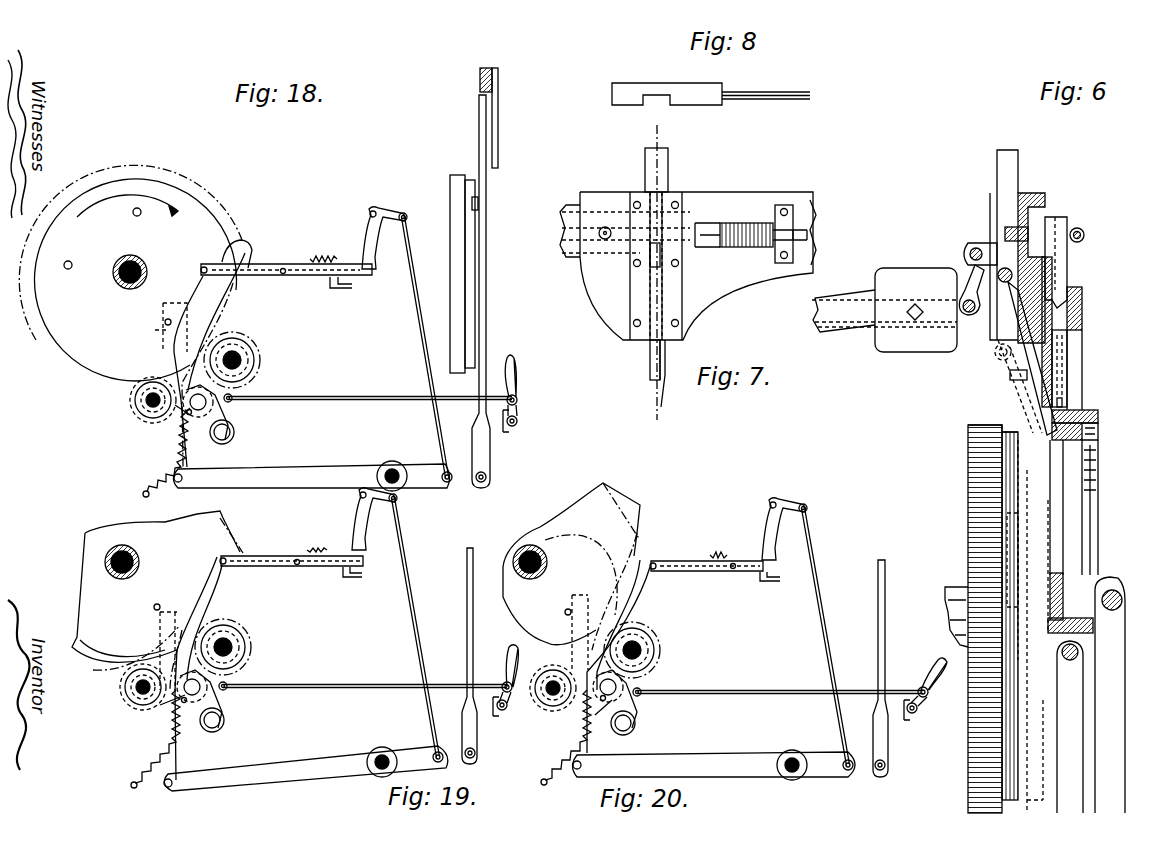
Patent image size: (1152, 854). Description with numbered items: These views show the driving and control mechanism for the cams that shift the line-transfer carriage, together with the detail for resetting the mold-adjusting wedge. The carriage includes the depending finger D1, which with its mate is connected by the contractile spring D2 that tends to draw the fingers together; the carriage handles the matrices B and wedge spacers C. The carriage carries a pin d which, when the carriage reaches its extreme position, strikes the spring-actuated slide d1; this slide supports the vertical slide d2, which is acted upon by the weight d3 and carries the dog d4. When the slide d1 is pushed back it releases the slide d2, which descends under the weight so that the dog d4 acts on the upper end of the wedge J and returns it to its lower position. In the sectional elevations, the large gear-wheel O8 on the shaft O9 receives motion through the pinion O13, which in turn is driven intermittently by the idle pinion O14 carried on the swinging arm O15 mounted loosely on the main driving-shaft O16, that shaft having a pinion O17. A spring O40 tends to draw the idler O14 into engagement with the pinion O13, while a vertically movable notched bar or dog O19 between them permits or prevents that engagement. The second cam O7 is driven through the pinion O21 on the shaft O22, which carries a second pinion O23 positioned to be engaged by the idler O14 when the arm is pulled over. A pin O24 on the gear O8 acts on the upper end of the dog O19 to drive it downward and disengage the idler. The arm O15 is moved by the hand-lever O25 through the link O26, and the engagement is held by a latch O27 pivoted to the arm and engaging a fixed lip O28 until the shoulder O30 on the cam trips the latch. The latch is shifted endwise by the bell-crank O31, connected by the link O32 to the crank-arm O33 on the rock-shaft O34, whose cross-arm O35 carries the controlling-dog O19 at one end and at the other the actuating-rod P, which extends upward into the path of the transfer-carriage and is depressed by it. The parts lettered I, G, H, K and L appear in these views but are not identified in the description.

In FIG. 18, the second cam O7 is at (171, 236).
In FIG. 19, the second cam O7 is at (156, 590).
In FIG. 20, the second cam O7 is at (571, 564).
In FIG. 18, the large gear-wheel O8 is at (178, 180).
In FIG. 19, the large gear-wheel O8 is at (226, 516).
In FIG. 20, the large gear-wheel O8 is at (615, 486).
In FIG. 18, the shaft O9 is at (130, 258).
In FIG. 19, the shaft O9 is at (108, 556).
In FIG. 20, the shaft O9 is at (528, 545).
In FIG. 18, the pinion O13 is at (139, 400).
In FIG. 19, the pinion O13 is at (125, 698).
In FIG. 20, the pinion O13 is at (552, 712).
In FIG. 18, the idle pinion O14 is at (178, 410).
In FIG. 19, the idle pinion O14 is at (160, 708).
In FIG. 20, the idle pinion O14 is at (630, 690).
In FIG. 18, the swinging arm O15 is at (183, 352).
In FIG. 19, the swinging arm O15 is at (205, 612).
In FIG. 20, the swinging arm O15 is at (640, 622).
In FIG. 18, the main driving-shaft O16 is at (232, 440).
In FIG. 19, the main driving-shaft O16 is at (224, 724).
In FIG. 20, the main driving-shaft O16 is at (636, 722).
In FIG. 18, the pinion O17 is at (216, 448).
In FIG. 19, the pinion O17 is at (206, 735).
In FIG. 20, the pinion O17 is at (630, 737).
In FIG. 18, the bar or dog O19 is at (170, 490).
In FIG. 19, the bar or dog O19 is at (160, 630).
In FIG. 20, the bar or dog O19 is at (582, 594).
In FIG. 18, the pinion O21 is at (238, 342).
In FIG. 19, the pinion O21 is at (232, 636).
In FIG. 20, the pinion O21 is at (650, 645).
In FIG. 18, the shaft O22 is at (238, 358).
In FIG. 19, the shaft O22 is at (232, 647).
In FIG. 20, the shaft O22 is at (641, 651).
In FIG. 18, the second pinion O23 is at (262, 363).
In FIG. 19, the second pinion O23 is at (252, 652).
In FIG. 20, the second pinion O23 is at (660, 654).
In FIG. 19, the pin O24 is at (156, 598).
In FIG. 18, the hand-lever O25 is at (518, 386).
In FIG. 19, the hand-lever O25 is at (508, 658).
In FIG. 20, the hand-lever O25 is at (938, 670).
In FIG. 18, the link O26 is at (380, 391).
In FIG. 19, the link O26 is at (352, 682).
In FIG. 20, the link O26 is at (752, 690).
In FIG. 18, the latch O27 is at (306, 275).
In FIG. 19, the latch O27 is at (310, 568).
In FIG. 20, the latch O27 is at (733, 572).
In FIG. 18, the fixed lip O28 is at (344, 287).
In FIG. 19, the fixed lip O28 is at (357, 580).
In FIG. 20, the fixed lip O28 is at (768, 584).
In FIG. 18, the shoulder O30 is at (242, 246).
In FIG. 19, the shoulder O30 is at (232, 548).
In FIG. 20, the shoulder O30 is at (640, 514).
In FIG. 18, the bell-crank O31 is at (396, 214).
In FIG. 19, the bell-crank O31 is at (362, 510).
In FIG. 20, the bell-crank O31 is at (792, 502).
In FIG. 18, the link O32 is at (425, 350).
In FIG. 19, the link O32 is at (418, 582).
In FIG. 20, the link O32 is at (828, 637).
In FIG. 18, the crank-arm O33 is at (411, 470).
In FIG. 19, the crank-arm O33 is at (421, 761).
In FIG. 20, the crank-arm O33 is at (831, 764).
In FIG. 18, the rock-shaft O34 is at (388, 466).
In FIG. 19, the rock-shaft O34 is at (385, 754).
In FIG. 20, the rock-shaft O34 is at (795, 755).
In FIG. 18, the cross-arm O35 is at (312, 476).
In FIG. 19, the cross-arm O35 is at (306, 768).
In FIG. 20, the cross-arm O35 is at (714, 764).
In FIG. 18, the spring O40 is at (170, 452).
In FIG. 19, the spring O40 is at (145, 752).
In FIG. 20, the spring O40 is at (555, 762).
In FIG. 18, the actuating-rod P is at (488, 330).
In FIG. 19, the actuating-rod P is at (467, 620).
In FIG. 20, the actuating-rod P is at (885, 617).
In FIG. 18, the bar I is at (454, 274).
In FIG. 18, the finger D1 is at (498, 112).
In FIG. 7, the finger D1 is at (573, 230).
In FIG. 6, the finger D1 is at (1067, 263).
In FIG. 8, the spring-actuated slide d1 is at (683, 90).
In FIG. 6, the spring-actuated slide d1 is at (1028, 235).
In FIG. 7, the vertical slide d2 is at (668, 178).
In FIG. 6, the vertical slide d2 is at (1000, 173).
In FIG. 6, the contractile spring D2 is at (1082, 230).
In FIG. 6, the weight d3 is at (905, 290).
In FIG. 7, the dog d4 is at (650, 347).
In FIG. 6, the dog d4 is at (1020, 357).
In FIG. 7, the pin d is at (605, 240).
In FIG. 6, the matrices B is at (1082, 312).
In FIG. 6, the wedge spacers C is at (1060, 352).
In FIG. 6, the frame G is at (1063, 470).
In FIG. 6, the bar H is at (1098, 416).
In FIG. 6, the ratchet K is at (1003, 480).
In FIG. 6, the block L is at (970, 528).
In FIG. 6, the wedge J is at (1015, 560).